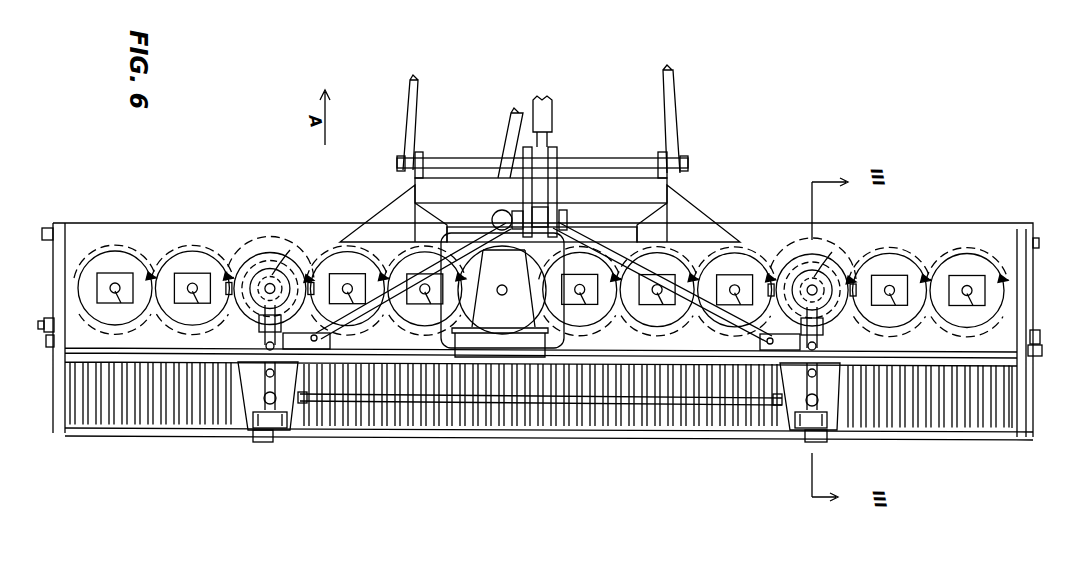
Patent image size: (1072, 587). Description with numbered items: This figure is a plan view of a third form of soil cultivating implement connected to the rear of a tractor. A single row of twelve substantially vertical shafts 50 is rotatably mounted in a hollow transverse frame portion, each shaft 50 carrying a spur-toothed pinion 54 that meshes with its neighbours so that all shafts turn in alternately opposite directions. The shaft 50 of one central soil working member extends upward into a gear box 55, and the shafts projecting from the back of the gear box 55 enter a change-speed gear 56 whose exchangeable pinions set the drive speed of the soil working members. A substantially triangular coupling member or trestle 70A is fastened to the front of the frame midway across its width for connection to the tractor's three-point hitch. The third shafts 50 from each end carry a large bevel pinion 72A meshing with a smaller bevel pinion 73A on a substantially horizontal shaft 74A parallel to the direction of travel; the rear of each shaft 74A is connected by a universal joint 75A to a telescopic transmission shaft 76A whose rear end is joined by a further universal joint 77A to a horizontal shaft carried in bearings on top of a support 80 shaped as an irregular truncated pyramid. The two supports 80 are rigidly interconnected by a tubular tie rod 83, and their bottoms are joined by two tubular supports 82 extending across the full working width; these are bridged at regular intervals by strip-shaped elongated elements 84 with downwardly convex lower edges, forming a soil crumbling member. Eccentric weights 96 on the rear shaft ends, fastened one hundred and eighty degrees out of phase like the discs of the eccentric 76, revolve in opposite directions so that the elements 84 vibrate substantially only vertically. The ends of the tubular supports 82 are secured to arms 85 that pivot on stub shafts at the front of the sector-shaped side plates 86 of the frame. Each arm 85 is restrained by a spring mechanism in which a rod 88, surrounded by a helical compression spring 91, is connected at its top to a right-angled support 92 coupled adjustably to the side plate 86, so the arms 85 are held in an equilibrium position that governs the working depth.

The shaft 50 is at (128, 313).
The pinion 54 is at (160, 242).
The gear box 55 is at (418, 305).
The change-speed gear 56 is at (493, 352).
The coupling member or trestle 70A is at (630, 185).
The large bevel pinion 72A is at (256, 255).
The smaller bevel pinion 73A is at (330, 334).
The substantially horizontal shaft 74A is at (269, 262).
The universal joint 75A is at (278, 365).
The eccentric 76 is at (260, 318).
The telescopic transmission shaft 76A is at (262, 365).
The further universal joint 77A is at (268, 445).
The support 80 is at (288, 432).
The tubular support 82 is at (362, 428).
The tubular tie rod 83 is at (690, 402).
The strip-shaped elongated element 84 is at (900, 428).
The arm 85 is at (53, 425).
The side or end plate 86 is at (62, 232).
The rod 88 is at (48, 318).
The helical compression spring 91 is at (404, 438).
The right-angled support 92 is at (46, 341).
The eccentric weight 96 is at (262, 440).